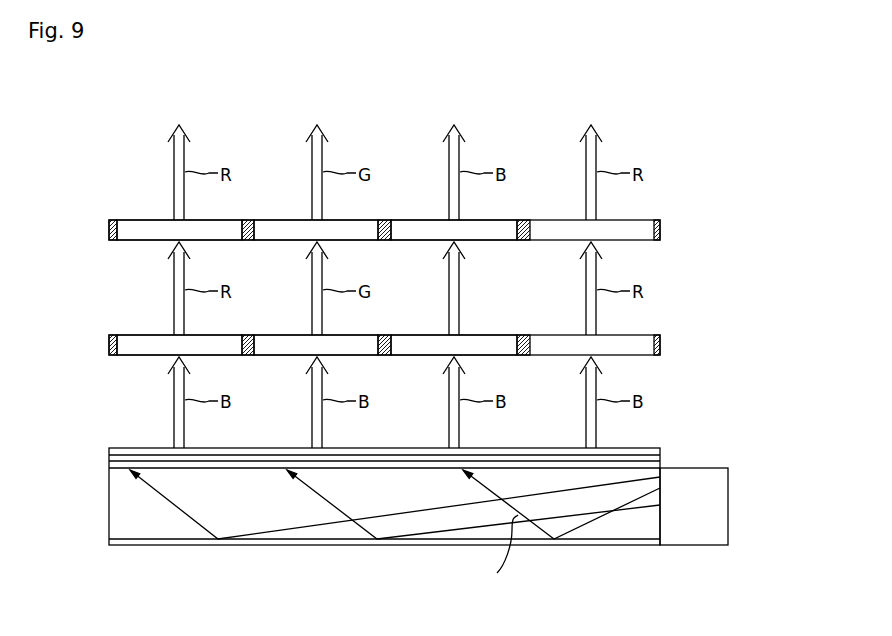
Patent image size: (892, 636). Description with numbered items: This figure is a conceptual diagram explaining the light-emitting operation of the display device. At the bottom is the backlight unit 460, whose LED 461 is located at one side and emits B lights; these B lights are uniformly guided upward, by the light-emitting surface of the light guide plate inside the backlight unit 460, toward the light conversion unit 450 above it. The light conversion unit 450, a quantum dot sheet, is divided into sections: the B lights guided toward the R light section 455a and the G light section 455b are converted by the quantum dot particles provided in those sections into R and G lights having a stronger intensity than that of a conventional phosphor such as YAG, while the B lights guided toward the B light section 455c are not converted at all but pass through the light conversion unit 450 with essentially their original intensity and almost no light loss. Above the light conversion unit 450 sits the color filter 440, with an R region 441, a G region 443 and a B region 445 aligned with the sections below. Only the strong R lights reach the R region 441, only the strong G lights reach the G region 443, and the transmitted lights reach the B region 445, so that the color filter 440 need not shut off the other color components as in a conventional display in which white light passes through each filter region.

The color filter 440 is at (433, 200).
The R region 441 is at (140, 228).
The G region 443 is at (281, 228).
The B region 445 is at (418, 228).
The light conversion unit 450 is at (411, 344).
The R light section 455a is at (143, 340).
The G light section 455b is at (283, 347).
The B light section 455c is at (472, 343).
The backlight unit 460 is at (460, 499).
The LED 461 is at (718, 507).